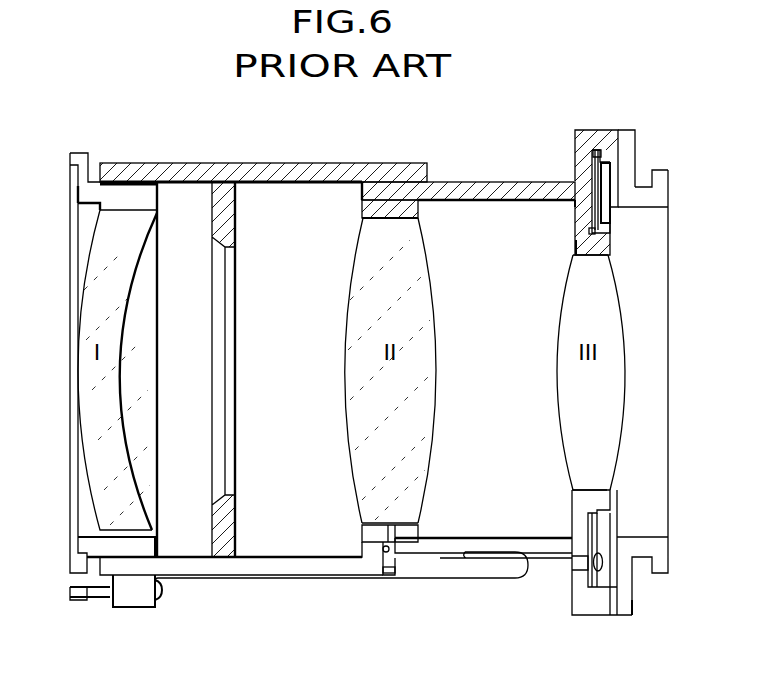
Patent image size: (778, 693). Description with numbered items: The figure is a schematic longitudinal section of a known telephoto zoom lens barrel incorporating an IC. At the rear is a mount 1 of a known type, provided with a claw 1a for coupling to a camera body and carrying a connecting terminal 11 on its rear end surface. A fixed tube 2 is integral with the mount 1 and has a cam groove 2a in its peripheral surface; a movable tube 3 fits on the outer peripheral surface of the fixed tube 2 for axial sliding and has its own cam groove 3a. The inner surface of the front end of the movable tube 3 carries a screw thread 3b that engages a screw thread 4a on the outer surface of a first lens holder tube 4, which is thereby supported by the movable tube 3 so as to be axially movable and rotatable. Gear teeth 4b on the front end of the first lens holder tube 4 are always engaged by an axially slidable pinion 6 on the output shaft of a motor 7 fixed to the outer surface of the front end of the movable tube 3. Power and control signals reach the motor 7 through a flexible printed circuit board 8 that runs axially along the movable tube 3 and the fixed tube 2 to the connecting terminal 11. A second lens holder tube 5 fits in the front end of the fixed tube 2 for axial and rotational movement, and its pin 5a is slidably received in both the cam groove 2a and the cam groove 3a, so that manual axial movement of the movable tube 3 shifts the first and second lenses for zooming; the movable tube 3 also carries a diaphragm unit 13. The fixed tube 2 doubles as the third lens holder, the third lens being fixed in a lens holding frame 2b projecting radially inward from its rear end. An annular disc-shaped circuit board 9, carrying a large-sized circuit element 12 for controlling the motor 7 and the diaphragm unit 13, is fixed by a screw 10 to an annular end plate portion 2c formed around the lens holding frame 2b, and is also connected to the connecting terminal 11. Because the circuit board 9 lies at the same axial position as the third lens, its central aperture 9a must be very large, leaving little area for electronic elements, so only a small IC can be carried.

The mount 1 is at (631, 147).
The claw 1a is at (665, 176).
The fixed tube 2 is at (480, 192).
The cam groove 2a is at (383, 549).
The lens holding frame 2b is at (583, 246).
The annular end plate portion 2c is at (576, 207).
The movable tube 3 is at (330, 170).
The cam groove 3a is at (398, 563).
The screw thread 3b is at (140, 184).
The first lens holder tube 4 is at (120, 196).
The screw thread 4a is at (78, 208).
The gear teeth 4b is at (72, 582).
The second lens holder tube 5 is at (362, 208).
The pin 5a is at (390, 577).
The pinion 6 is at (80, 602).
The motor 7 is at (140, 598).
The flexible printed circuit board 8 is at (496, 580).
The circuit board 9 is at (603, 152).
The central aperture 9a is at (595, 233).
The screw 10 is at (603, 555).
The connecting terminal 11 is at (634, 601).
The circuit element 12 is at (611, 215).
The diaphragm unit 13 is at (230, 240).